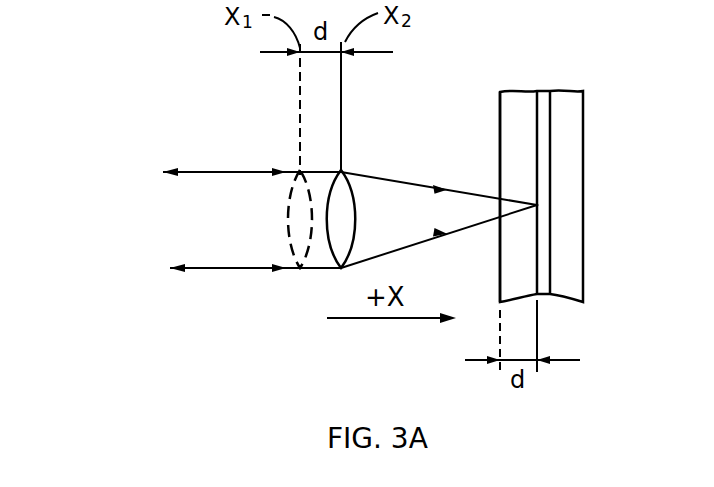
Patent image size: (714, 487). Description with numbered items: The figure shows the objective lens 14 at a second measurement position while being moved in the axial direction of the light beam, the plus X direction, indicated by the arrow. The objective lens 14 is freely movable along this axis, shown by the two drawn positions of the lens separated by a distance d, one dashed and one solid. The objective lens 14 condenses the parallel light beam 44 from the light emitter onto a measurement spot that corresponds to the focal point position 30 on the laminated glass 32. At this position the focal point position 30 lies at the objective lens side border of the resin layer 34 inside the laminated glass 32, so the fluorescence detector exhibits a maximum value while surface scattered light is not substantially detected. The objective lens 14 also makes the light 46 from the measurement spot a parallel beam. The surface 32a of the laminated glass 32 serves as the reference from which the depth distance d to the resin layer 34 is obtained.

The objective lens 14 is at (297, 270).
The focal point position 30 is at (537, 203).
The laminated glass 32 is at (616, 346).
The laminated glass surface 32a is at (500, 108).
The resin layer 34 is at (545, 96).
The parallel light beam 44 is at (262, 172).
The light from the measurement spot 46 is at (200, 172).